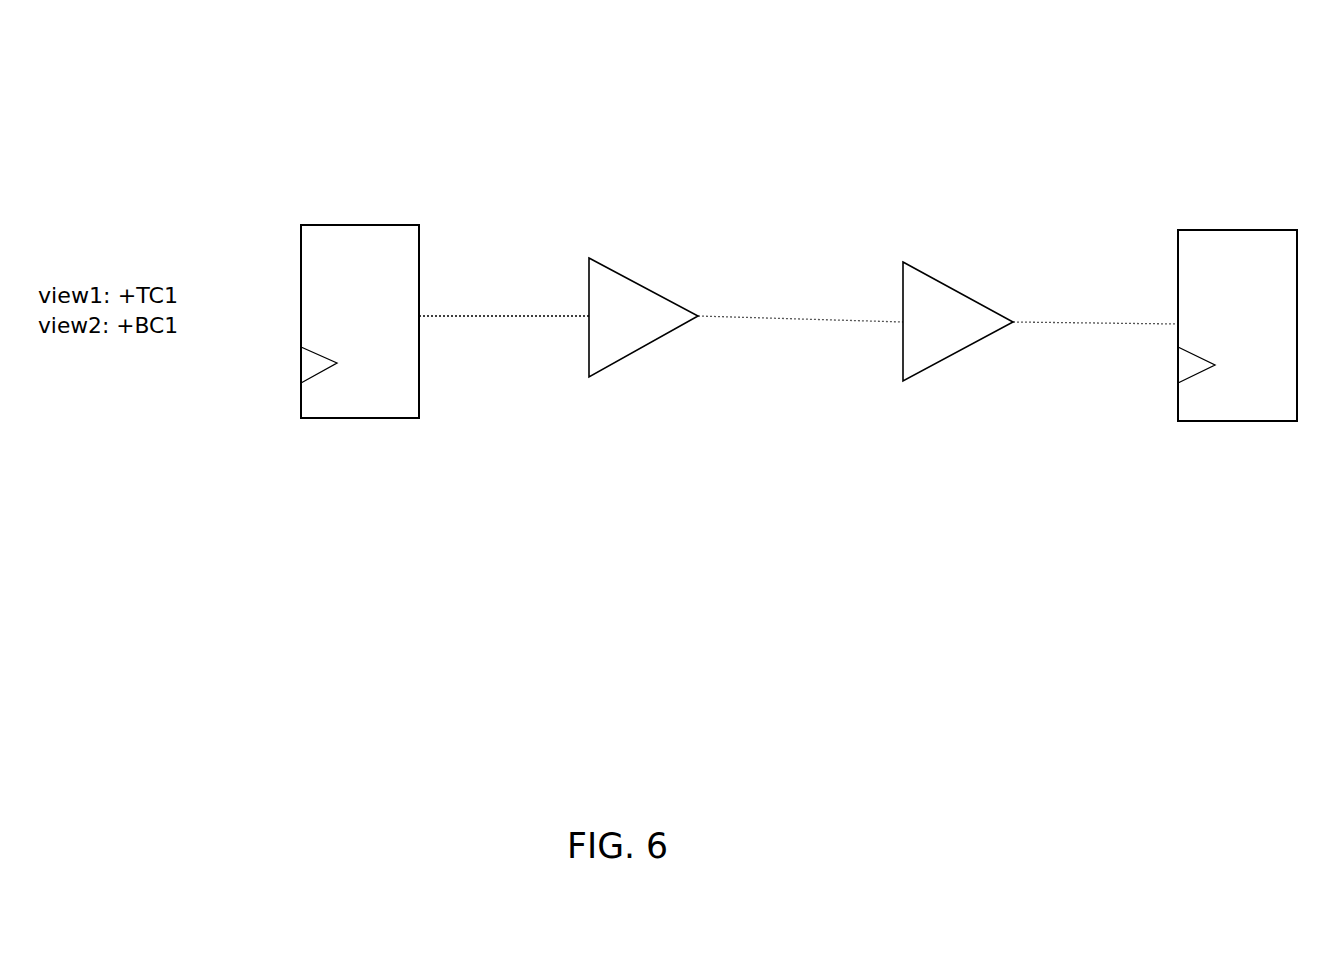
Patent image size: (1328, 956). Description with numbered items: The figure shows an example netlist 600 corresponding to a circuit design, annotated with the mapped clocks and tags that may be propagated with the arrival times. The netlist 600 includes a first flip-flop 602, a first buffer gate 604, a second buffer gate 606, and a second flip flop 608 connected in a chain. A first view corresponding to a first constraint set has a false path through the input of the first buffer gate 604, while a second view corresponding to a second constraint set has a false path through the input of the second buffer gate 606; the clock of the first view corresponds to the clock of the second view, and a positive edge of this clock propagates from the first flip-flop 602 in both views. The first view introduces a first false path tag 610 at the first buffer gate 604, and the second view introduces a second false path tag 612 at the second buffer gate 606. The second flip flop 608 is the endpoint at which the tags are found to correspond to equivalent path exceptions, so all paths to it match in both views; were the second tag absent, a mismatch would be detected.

The netlist 600 is at (988, 72).
The flip-flop 602 is at (337, 222).
The buffer gate 604 is at (652, 340).
The buffer gate 606 is at (953, 357).
The flip flop 608 is at (1249, 228).
The false path tag 610 is at (598, 177).
The false path tag 612 is at (862, 477).